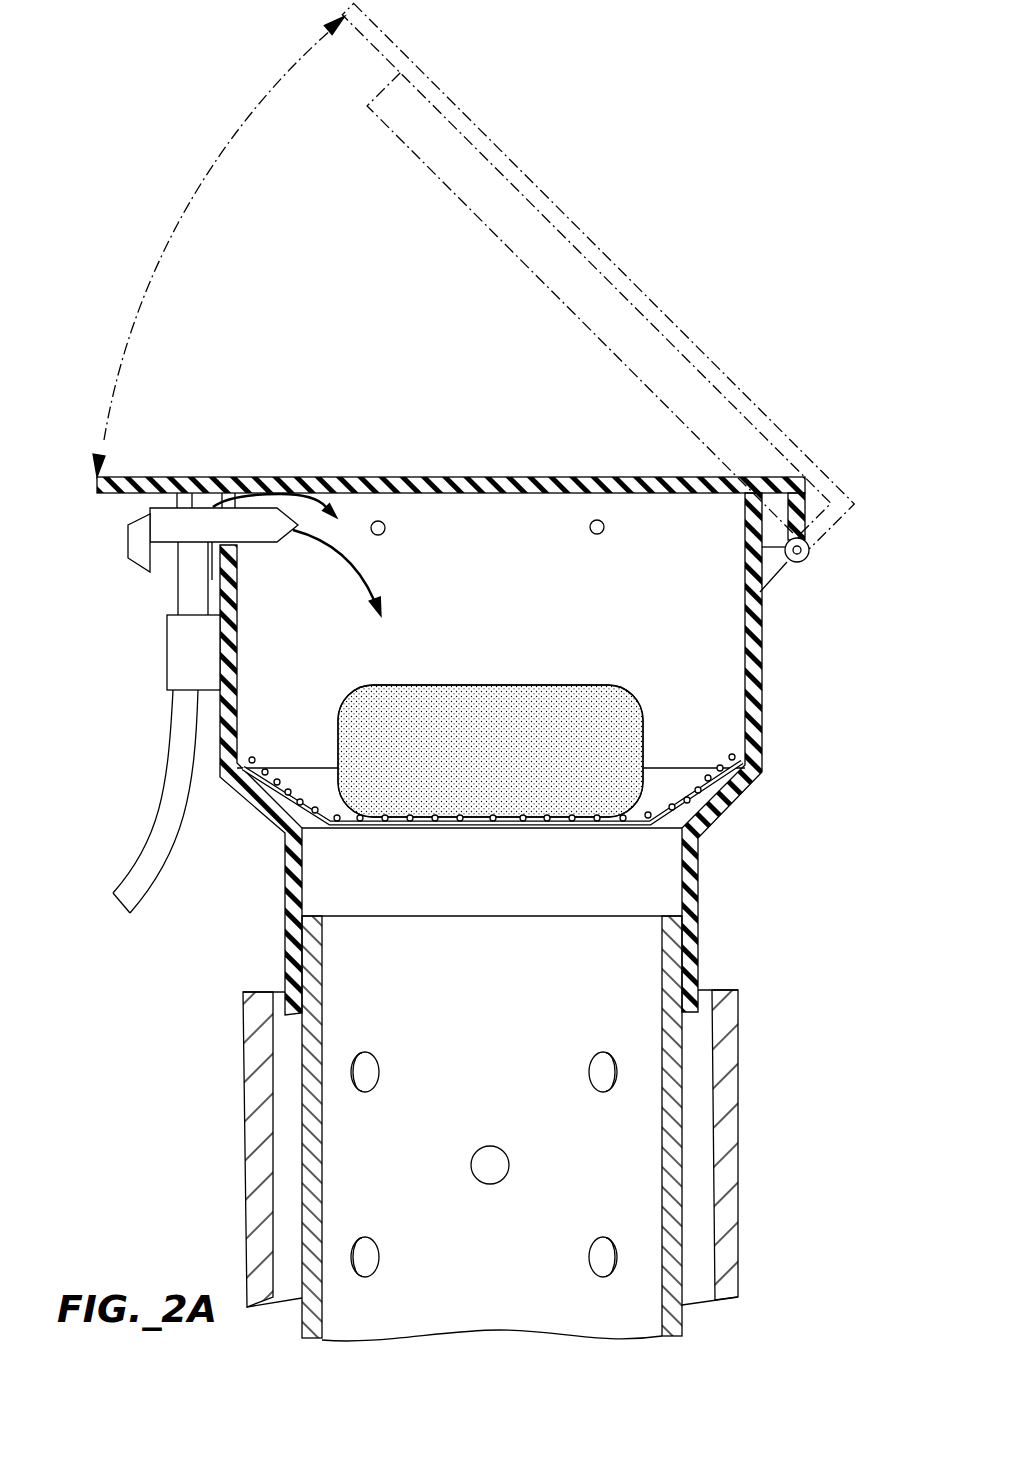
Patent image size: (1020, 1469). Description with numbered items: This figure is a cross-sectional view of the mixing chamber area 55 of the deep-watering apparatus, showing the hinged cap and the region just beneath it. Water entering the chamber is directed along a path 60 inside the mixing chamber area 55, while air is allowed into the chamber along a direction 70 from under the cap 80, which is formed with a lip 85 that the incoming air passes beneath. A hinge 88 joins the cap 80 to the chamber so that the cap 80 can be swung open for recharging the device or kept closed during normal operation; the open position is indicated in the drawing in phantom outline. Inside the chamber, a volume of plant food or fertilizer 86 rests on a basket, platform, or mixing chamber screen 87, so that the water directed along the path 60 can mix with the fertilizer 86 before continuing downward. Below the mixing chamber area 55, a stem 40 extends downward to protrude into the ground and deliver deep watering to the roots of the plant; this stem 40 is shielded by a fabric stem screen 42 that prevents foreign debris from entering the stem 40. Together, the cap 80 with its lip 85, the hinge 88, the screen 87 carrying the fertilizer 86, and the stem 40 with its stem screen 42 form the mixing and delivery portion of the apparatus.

The cap 80 is at (625, 262).
The lip 85 is at (177, 477).
The direction of air 70 is at (347, 522).
The path 60 is at (348, 572).
The plant food or fertilizer 86 is at (565, 683).
The mixing chamber area 55 is at (723, 677).
The hinge 88 is at (805, 562).
The mixing chamber screen 87 is at (710, 790).
The stem screen 42 is at (740, 1125).
The stem 40 is at (683, 1313).